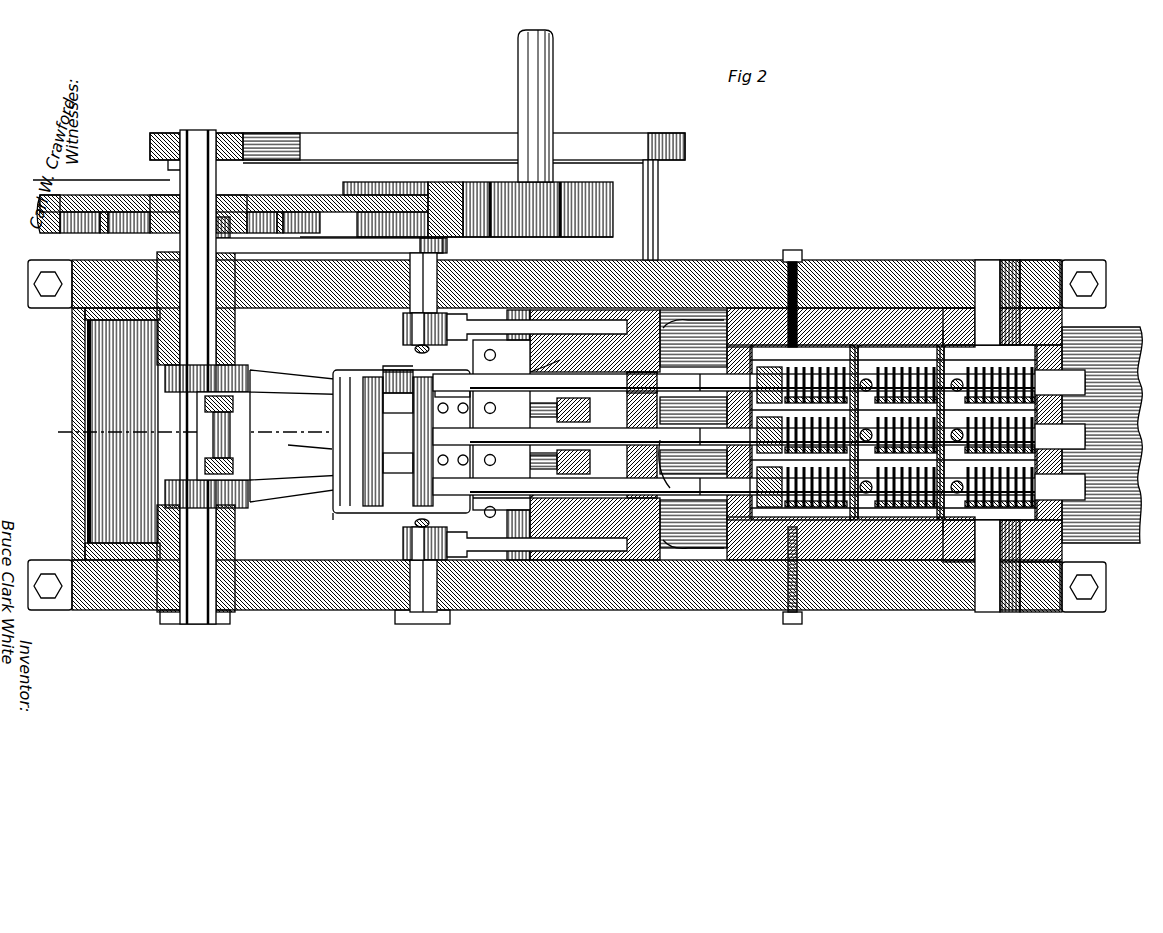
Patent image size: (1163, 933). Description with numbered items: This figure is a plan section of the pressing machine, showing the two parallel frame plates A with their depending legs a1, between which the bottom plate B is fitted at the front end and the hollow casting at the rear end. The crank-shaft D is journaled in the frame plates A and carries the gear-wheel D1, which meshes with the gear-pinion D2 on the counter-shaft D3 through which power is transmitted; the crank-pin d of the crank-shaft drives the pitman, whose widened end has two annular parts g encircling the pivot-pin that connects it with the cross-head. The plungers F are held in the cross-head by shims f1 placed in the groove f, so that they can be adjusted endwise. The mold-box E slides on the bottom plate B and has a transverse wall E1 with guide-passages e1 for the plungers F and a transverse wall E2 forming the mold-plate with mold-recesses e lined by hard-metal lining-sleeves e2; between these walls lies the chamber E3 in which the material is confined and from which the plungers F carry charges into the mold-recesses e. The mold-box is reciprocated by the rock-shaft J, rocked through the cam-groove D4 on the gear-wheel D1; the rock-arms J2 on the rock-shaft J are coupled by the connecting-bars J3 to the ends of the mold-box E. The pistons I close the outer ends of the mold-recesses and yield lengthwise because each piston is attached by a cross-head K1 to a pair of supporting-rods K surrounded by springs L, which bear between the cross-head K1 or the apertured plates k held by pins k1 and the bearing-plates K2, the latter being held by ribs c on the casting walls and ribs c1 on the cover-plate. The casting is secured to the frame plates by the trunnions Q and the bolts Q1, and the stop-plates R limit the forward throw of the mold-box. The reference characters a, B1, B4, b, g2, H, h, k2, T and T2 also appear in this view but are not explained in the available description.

The frame plates A is at (716, 262).
The rotor hub a is at (198, 480).
The depending legs a1 is at (1080, 266).
The bottom plate B is at (372, 518).
The field core laminations B1 is at (88, 425).
The guide B4 is at (530, 458).
The guide bar b is at (501, 435).
The ribs c is at (887, 285).
The ribs c1 is at (384, 368).
The crank-shaft D is at (236, 345).
The gear-wheel D1 is at (362, 178).
The gear-pinion D2 is at (604, 238).
The counter-shaft D3 is at (554, 104).
The cam-groove D4 is at (82, 197).
The crank-pin d is at (306, 436).
The mold-box E is at (644, 545).
The transverse wall E1 is at (530, 512).
The transverse wall E2 is at (693, 524).
The chamber E3 is at (648, 318).
The mold-recesses e is at (693, 394).
The guide-passages e1 is at (583, 436).
The lining-sleeves e2 is at (627, 381).
The plungers F is at (759, 431).
The groove f is at (398, 381).
The shims f1 is at (368, 250).
The annular parts g is at (401, 441).
The arm g2 is at (310, 456).
The passage H is at (671, 464).
The guide rod h is at (501, 488).
The pistons I is at (254, 436).
The rock-shaft J is at (236, 197).
The rock-arms J2 is at (425, 436).
The connecting-bars J3 is at (541, 320).
The supporting-rods K is at (1079, 436).
The cross-head K1 is at (765, 367).
The bearing-plates K2 is at (876, 525).
The apertured plates k is at (900, 354).
The pins k1 is at (972, 380).
The spring follower k2 is at (950, 540).
The springs L is at (1142, 470).
The trunnions Q is at (997, 436).
The bolts Q1 is at (792, 250).
The stop-plates R is at (700, 318).
The rod T is at (906, 431).
The rod T2 is at (659, 219).